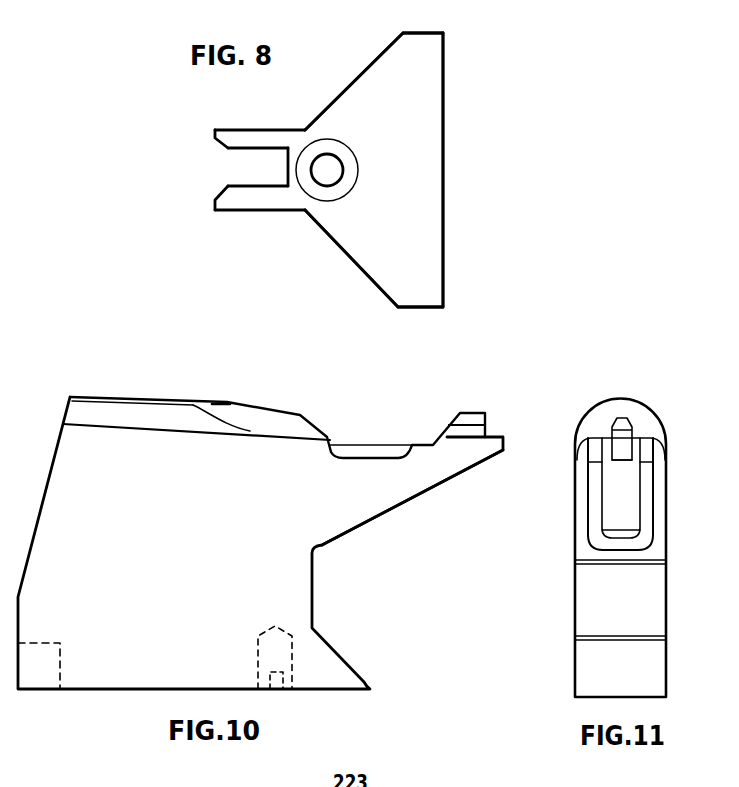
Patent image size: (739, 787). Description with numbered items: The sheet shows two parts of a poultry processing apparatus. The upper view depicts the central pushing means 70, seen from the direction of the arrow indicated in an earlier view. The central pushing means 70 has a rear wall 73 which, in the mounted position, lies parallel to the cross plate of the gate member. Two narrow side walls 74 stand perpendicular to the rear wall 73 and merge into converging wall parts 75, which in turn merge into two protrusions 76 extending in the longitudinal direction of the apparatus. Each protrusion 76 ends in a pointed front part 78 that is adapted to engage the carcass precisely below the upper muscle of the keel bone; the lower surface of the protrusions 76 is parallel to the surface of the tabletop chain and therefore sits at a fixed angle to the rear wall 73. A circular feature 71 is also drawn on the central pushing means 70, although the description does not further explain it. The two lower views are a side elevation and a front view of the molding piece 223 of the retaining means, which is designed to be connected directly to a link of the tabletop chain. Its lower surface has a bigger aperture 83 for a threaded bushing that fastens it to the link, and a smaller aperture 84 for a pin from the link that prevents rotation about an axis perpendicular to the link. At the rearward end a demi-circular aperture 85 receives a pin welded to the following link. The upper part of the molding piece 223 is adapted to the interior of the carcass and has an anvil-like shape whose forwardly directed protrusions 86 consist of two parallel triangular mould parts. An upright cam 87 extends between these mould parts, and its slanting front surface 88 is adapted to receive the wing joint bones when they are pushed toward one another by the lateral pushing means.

In FIG. 8, the central pushing means 70 is at (424, 100).
In FIG. 8, the pivot hole 71 is at (329, 168).
In FIG. 8, the rear wall 73 is at (444, 186).
In FIG. 8, the narrow side walls 74 is at (423, 33).
In FIG. 8, the converging wall parts 75 is at (360, 78).
In FIG. 8, the protrusions 76 is at (264, 129).
In FIG. 8, the pointed front part 78 is at (217, 131).
In FIG. 10, the molding piece 223 is at (109, 376).
In FIG. 11, the molding piece 223 is at (629, 386).
In FIG. 10, the bigger aperture 83 is at (270, 648).
In FIG. 10, the smaller aperture 84 is at (274, 681).
In FIG. 10, the demi-circular aperture 85 is at (42, 670).
In FIG. 10, the forwardly directed protrusions 86 is at (396, 490).
In FIG. 11, the forwardly directed protrusions 86 is at (583, 521).
In FIG. 10, the upright cam 87 is at (474, 415).
In FIG. 11, the upright cam 87 is at (631, 422).
In FIG. 10, the slanting front surface 88 is at (476, 431).
In FIG. 11, the slanting front surface 88 is at (617, 452).